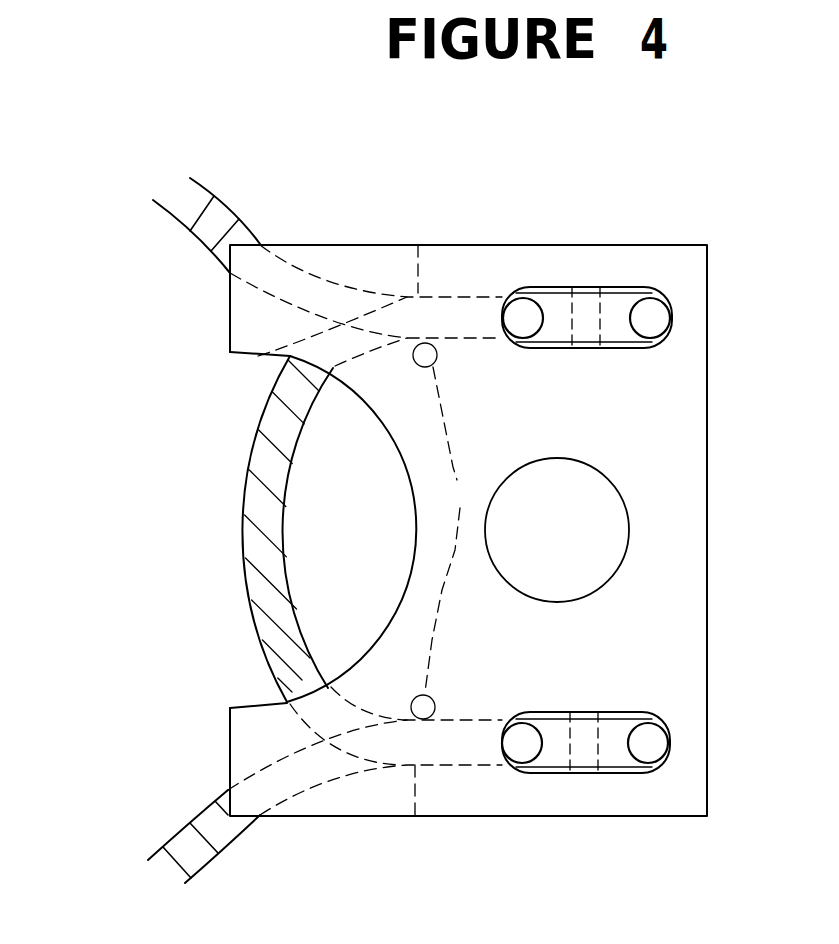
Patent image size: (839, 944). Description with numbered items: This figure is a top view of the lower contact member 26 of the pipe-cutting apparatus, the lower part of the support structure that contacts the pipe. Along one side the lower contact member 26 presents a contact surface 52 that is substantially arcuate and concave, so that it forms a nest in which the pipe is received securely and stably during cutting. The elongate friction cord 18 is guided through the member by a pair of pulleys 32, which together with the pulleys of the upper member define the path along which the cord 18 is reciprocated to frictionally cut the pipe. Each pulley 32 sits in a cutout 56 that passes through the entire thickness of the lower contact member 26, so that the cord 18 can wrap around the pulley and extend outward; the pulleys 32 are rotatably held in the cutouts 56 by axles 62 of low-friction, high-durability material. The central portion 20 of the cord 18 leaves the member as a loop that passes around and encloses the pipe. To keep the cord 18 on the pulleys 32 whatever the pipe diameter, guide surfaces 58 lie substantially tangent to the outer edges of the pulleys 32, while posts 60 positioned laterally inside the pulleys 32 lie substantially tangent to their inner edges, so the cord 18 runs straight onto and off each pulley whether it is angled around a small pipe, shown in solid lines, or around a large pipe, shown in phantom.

The cord 18 is at (650, 320).
The central portion 20 is at (210, 264).
The lower contact member 26 is at (522, 267).
The pulleys 32 is at (613, 317).
The contact surface 52 is at (258, 356).
The cutouts 56 is at (613, 285).
The guide surfaces 58 is at (422, 270).
The posts 60 is at (358, 531).
The axles 62 is at (587, 344).